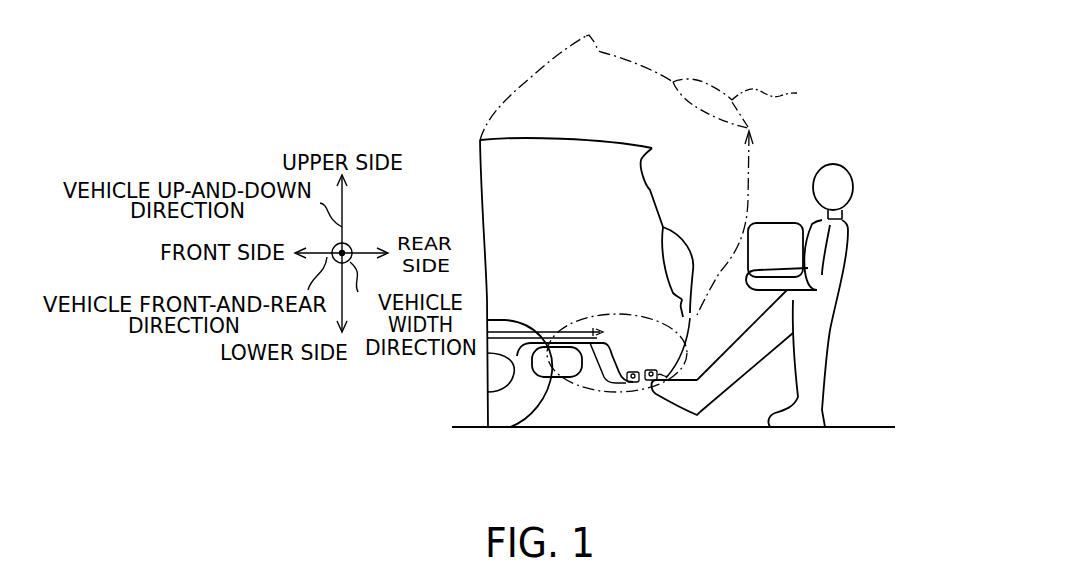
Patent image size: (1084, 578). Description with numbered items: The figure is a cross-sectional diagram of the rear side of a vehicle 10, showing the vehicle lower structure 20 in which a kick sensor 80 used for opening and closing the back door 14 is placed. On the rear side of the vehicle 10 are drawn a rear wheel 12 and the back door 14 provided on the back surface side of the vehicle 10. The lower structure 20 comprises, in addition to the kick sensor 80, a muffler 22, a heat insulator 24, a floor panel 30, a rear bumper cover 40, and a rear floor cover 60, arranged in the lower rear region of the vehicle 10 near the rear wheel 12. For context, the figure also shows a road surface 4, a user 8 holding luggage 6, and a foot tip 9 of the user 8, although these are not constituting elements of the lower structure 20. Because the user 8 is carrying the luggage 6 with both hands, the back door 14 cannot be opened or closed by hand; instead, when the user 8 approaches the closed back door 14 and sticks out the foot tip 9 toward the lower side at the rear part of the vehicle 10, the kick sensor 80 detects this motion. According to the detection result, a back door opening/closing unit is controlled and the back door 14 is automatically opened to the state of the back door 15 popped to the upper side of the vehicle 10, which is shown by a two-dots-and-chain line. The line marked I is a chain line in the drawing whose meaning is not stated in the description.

The road surface 4 is at (862, 427).
The luggage 6 is at (779, 222).
The user 8 is at (836, 307).
The foot tip 9 is at (678, 397).
The vehicle 10 is at (479, 190).
The rear wheel 12 is at (507, 403).
The back door 14 is at (653, 187).
The back door (popped-up state) 15 is at (776, 93).
The vehicle lower structure 20 is at (561, 396).
The muffler 22 is at (532, 380).
The heat insulator 24 is at (517, 340).
The floor panel 30 is at (588, 338).
The rear bumper cover 40 is at (665, 318).
The rear floor cover 60 is at (627, 320).
The kick sensor 80 is at (640, 367).
The imaginary line I is at (615, 393).